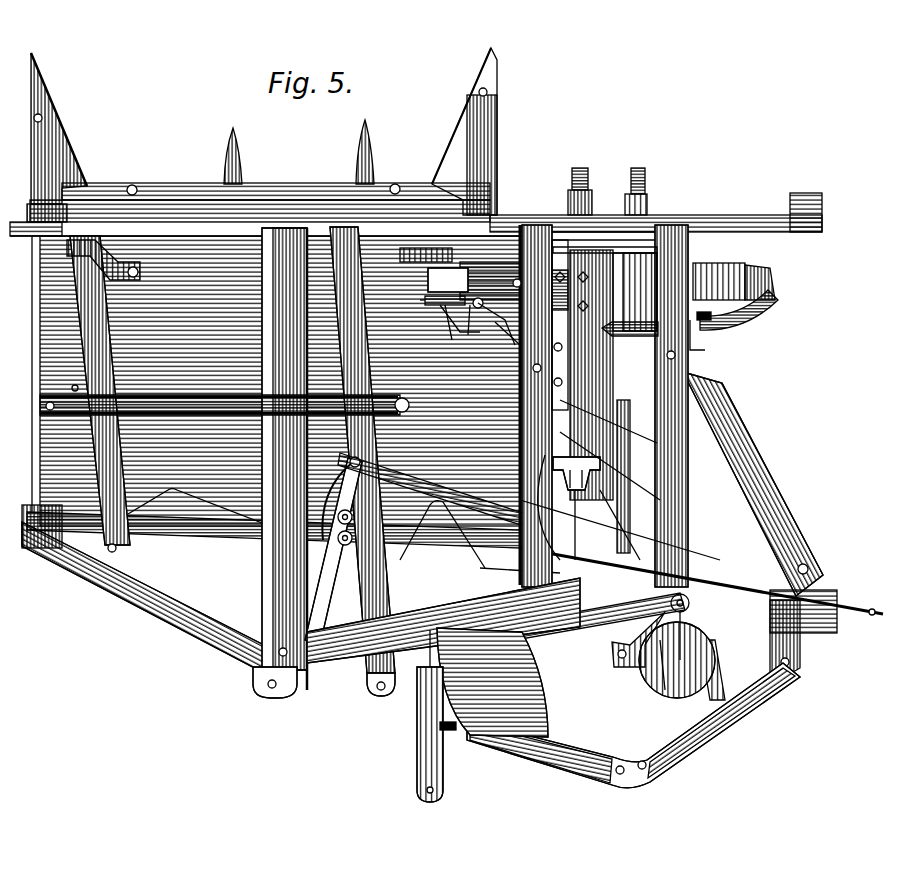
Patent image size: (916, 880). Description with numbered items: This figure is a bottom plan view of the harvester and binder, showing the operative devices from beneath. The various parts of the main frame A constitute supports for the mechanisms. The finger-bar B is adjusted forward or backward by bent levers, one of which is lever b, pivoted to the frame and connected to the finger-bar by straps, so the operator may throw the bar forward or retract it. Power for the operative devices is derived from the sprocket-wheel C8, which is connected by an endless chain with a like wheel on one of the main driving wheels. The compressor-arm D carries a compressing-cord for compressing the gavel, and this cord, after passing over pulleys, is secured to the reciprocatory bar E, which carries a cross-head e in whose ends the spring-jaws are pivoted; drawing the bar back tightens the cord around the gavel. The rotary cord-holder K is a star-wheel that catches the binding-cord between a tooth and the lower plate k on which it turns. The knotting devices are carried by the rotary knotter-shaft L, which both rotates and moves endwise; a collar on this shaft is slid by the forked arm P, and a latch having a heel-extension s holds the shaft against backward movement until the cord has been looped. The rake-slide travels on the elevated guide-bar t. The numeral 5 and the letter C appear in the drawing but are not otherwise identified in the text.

The main frame A is at (422, 420).
The finger-bar B is at (273, 373).
The bent lever b is at (350, 461).
The rotary cord-holder K is at (490, 279).
The lower plate k is at (470, 323).
The crank C is at (454, 324).
The arm P is at (507, 342).
The reciprocatory bar E is at (589, 406).
The cross-head e is at (619, 476).
The compressor-arm D is at (620, 493).
The bar 5 is at (630, 337).
The rotary knotter-shaft L is at (776, 290).
The heel-extension s is at (735, 335).
The sprocket-wheel C8 is at (677, 653).
The guide-bar t is at (438, 716).